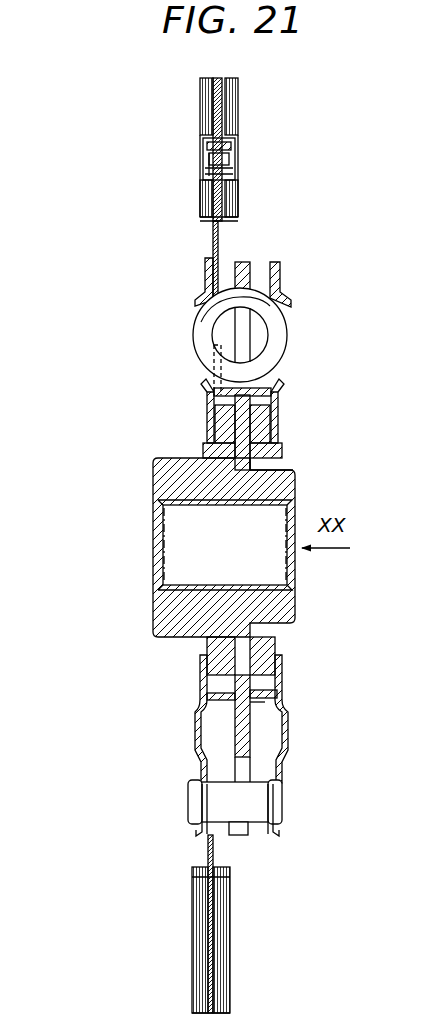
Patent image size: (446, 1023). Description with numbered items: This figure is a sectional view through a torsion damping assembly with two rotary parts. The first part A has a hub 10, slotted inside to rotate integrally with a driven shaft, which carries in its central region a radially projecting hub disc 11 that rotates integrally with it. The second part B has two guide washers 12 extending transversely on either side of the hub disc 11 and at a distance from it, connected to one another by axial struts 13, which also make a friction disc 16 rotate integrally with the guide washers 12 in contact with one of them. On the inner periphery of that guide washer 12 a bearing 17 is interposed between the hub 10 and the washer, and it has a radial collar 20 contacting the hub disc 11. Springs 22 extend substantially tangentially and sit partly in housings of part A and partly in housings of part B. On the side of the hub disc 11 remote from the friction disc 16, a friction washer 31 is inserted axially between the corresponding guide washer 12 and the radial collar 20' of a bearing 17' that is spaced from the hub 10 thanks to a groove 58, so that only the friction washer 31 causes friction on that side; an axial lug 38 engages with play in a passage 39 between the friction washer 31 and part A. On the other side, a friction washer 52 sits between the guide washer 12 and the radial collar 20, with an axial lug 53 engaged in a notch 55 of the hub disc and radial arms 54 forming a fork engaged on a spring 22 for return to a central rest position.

The hub 10 is at (152, 600).
The hub disc 11 is at (246, 261).
The guide washers 12 is at (207, 260).
The axial struts 13 is at (284, 795).
The friction disc 16 is at (243, 112).
The bearing 17 is at (184, 656).
The bearing 17' is at (301, 655).
The radial collar 20 is at (177, 719).
The radial collar 20' is at (314, 719).
The spring 22 is at (197, 329).
The friction washer 31 is at (277, 696).
The axial lug 38 is at (214, 696).
The passage 39 is at (252, 712).
The friction washer 52 is at (209, 390).
The axial lug 53 is at (279, 386).
The radial arms 54 is at (213, 350).
The notch 55 is at (272, 394).
The groove 58 is at (270, 466).
The first part A is at (152, 452).
The second part B is at (178, 128).